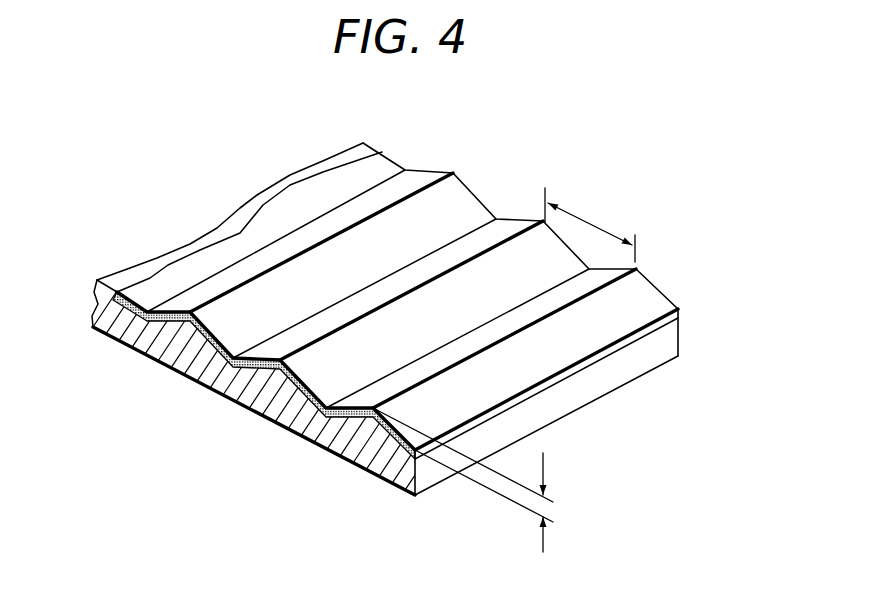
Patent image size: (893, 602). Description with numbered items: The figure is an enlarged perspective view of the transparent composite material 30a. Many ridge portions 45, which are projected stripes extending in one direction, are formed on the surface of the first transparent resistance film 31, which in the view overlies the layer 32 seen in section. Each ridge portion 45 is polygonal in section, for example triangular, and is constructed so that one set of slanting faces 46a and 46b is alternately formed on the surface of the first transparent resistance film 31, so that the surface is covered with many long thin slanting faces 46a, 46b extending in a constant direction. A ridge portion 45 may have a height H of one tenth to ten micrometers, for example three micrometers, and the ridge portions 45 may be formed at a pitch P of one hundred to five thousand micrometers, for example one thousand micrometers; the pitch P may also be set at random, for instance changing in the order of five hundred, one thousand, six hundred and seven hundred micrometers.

The transparent composite material 30a is at (440, 142).
The first transparent resistance film 31 is at (672, 323).
The surface layer 32 is at (262, 405).
The ridge portion 45 is at (463, 182).
The slanting face 46a is at (128, 342).
The slanting face 46b is at (183, 323).
The pitch P is at (590, 225).
The height H is at (470, 480).